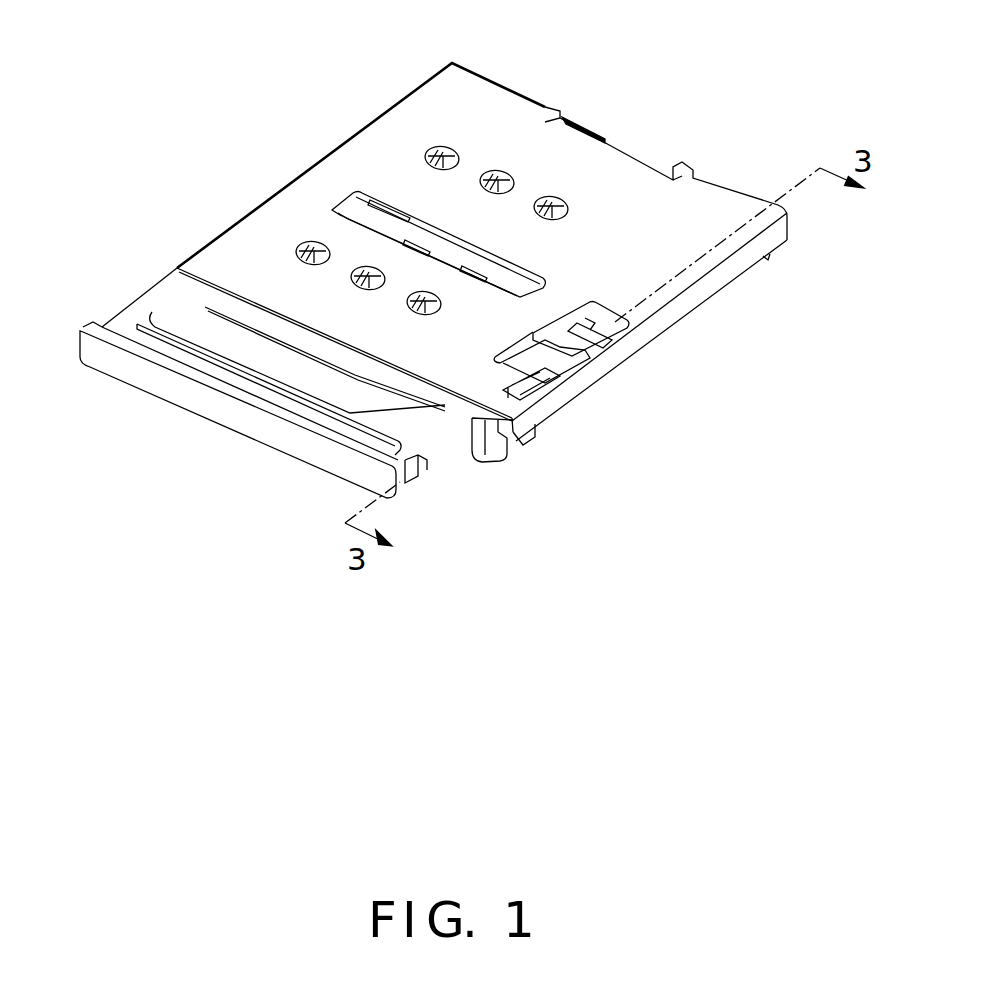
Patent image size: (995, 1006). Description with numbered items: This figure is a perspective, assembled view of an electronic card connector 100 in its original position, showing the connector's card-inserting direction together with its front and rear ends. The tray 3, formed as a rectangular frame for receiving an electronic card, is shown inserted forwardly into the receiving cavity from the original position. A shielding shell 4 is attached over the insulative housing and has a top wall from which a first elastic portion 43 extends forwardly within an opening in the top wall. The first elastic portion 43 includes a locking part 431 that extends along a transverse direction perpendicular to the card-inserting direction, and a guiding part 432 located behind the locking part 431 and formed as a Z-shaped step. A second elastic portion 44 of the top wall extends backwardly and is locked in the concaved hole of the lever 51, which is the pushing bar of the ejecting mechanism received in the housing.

The electronic card connector 100 is at (248, 195).
The tray 3 is at (150, 377).
The shielding shell 4 is at (475, 108).
The first elastic portion 43 is at (615, 401).
The locking part 431 is at (618, 330).
The guiding part 432 is at (575, 400).
The second elastic portion 44 is at (537, 395).
The lever 51 is at (490, 446).